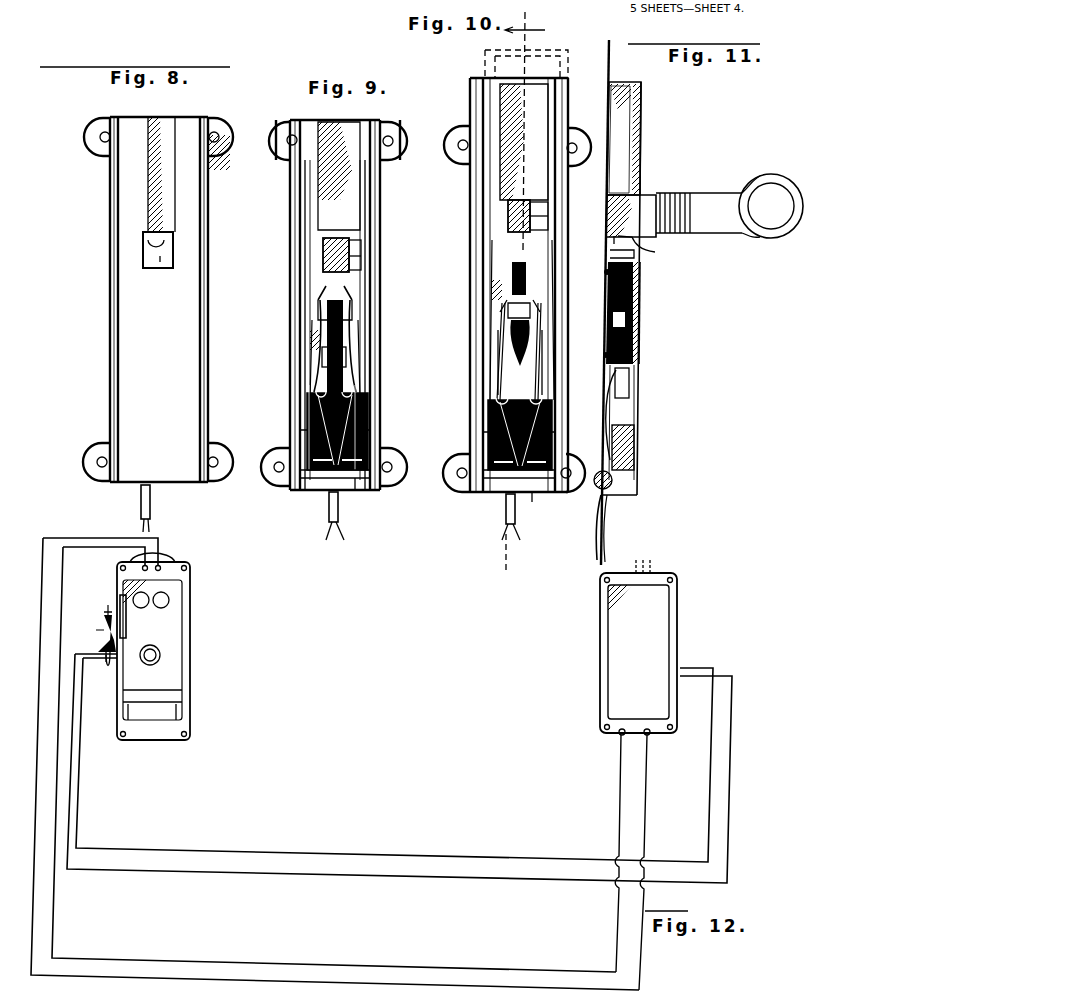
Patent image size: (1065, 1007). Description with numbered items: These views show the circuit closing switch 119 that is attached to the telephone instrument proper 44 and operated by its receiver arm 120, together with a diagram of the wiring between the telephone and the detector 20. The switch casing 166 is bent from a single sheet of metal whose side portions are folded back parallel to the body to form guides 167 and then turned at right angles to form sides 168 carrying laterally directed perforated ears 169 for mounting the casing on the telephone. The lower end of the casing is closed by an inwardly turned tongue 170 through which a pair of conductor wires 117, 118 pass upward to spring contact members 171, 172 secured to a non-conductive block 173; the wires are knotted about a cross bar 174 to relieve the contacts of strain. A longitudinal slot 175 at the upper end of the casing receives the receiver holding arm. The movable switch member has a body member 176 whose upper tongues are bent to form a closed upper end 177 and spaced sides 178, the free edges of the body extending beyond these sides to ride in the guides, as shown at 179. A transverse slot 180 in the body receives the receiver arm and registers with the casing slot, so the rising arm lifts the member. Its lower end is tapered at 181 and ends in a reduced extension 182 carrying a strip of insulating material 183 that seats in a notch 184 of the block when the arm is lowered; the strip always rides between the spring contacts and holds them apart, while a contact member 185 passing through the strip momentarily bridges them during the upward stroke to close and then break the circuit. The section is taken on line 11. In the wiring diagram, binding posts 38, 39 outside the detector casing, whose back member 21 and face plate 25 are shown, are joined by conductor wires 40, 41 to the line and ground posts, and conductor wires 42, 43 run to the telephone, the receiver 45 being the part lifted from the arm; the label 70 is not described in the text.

In FIG. 10, the section line 11 is at (525, 301).
In FIG. 12, the detector 20 is at (688, 633).
In FIG. 12, the back member 21 is at (656, 574).
In FIG. 12, the cover or face plate 25 is at (633, 646).
In FIG. 12, the binding post 38 is at (650, 738).
In FIG. 12, the binding post 39 is at (618, 738).
In FIG. 12, the conductor wire 40 is at (648, 728).
In FIG. 12, the conductor wire 41 is at (622, 728).
In FIG. 12, the conductor wire 42 is at (352, 980).
In FIG. 12, the conductor wire 43 is at (382, 932).
In FIG. 12, the telephone instrument proper 44 is at (188, 614).
In FIG. 12, the receiver 45 is at (102, 654).
In FIG. 10, the cord 70 is at (530, 500).
In FIG. 8, the conductor wire 117 is at (141, 516).
In FIG. 9, the conductor wire 117 is at (330, 532).
In FIG. 10, the conductor wire 117 is at (504, 538).
In FIG. 11, the conductor wire 117 is at (604, 560).
In FIG. 12, the conductor wire 117 is at (378, 814).
In FIG. 8, the conductor wire 118 is at (151, 516).
In FIG. 9, the conductor wire 118 is at (336, 538).
In FIG. 10, the conductor wire 118 is at (514, 538).
In FIG. 11, the conductor wire 118 is at (608, 564).
In FIG. 12, the conductor wire 118 is at (446, 887).
In FIG. 8, the switch 119 is at (104, 321).
In FIG. 9, the switch 119 is at (281, 329).
In FIG. 10, the switch 119 is at (479, 326).
In FIG. 11, the switch 119 is at (650, 385).
In FIG. 12, the switch 119 is at (118, 598).
In FIG. 9, the receiver arm 120 is at (362, 248).
In FIG. 10, the receiver arm 120 is at (548, 214).
In FIG. 11, the receiver arm 120 is at (670, 193).
In FIG. 12, the receiver arm 120 is at (104, 628).
In FIG. 8, the casing 166 is at (190, 350).
In FIG. 9, the casing 166 is at (362, 390).
In FIG. 10, the casing 166 is at (492, 372).
In FIG. 11, the casing 166 is at (642, 418).
In FIG. 12, the casing 166 is at (128, 630).
In FIG. 9, the guides 167 is at (300, 215).
In FIG. 10, the guides 167 is at (490, 106).
In FIG. 11, the guides 167 is at (646, 110).
In FIG. 9, the sides 168 is at (300, 282).
In FIG. 10, the sides 168 is at (556, 256).
In FIG. 8, the perforated ears 169 is at (216, 152).
In FIG. 9, the perforated ears 169 is at (394, 160).
In FIG. 10, the perforated ears 169 is at (578, 128).
In FIG. 9, the tongue 170 is at (346, 494).
In FIG. 11, the tongue 170 is at (616, 490).
In FIG. 9, the spring contact member 171 is at (312, 378).
In FIG. 10, the spring contact member 171 is at (496, 384).
In FIG. 11, the spring contact member 171 is at (640, 395).
In FIG. 9, the spring contact member 172 is at (350, 358).
In FIG. 10, the spring contact member 172 is at (545, 368).
In FIG. 9, the block 173 is at (362, 432).
In FIG. 10, the block 173 is at (544, 436).
In FIG. 11, the block 173 is at (640, 448).
In FIG. 9, the cross bar 174 is at (312, 490).
In FIG. 10, the cross bar 174 is at (488, 494).
In FIG. 8, the slot 175 is at (165, 255).
In FIG. 9, the slot 175 is at (362, 262).
In FIG. 10, the slot 175 is at (550, 222).
In FIG. 11, the slot 175 is at (656, 252).
In FIG. 8, the body member 176 is at (150, 182).
In FIG. 9, the closed upper end 177 is at (330, 122).
In FIG. 10, the closed upper end 177 is at (540, 84).
In FIG. 11, the closed upper end 177 is at (640, 88).
In FIG. 9, the spaced sides 178 is at (300, 182).
In FIG. 10, the spaced sides 178 is at (552, 88).
In FIG. 11, the spaced sides 178 is at (630, 142).
In FIG. 10, the engagement of body edges in guides 179 is at (486, 66).
In FIG. 8, the transverse slot 180 is at (162, 236).
In FIG. 9, the transverse slot 180 is at (350, 238).
In FIG. 10, the transverse slot 180 is at (536, 200).
In FIG. 11, the transverse slot 180 is at (640, 192).
In FIG. 9, the tapered lower end 181 is at (318, 312).
In FIG. 10, the tapered lower end 181 is at (508, 280).
In FIG. 9, the reduced extension 182 is at (305, 392).
In FIG. 10, the reduced extension 182 is at (520, 441).
In FIG. 11, the reduced extension 182 is at (640, 302).
In FIG. 9, the strip of insulating material 183 is at (352, 300).
In FIG. 10, the strip of insulating material 183 is at (540, 302).
In FIG. 11, the strip of insulating material 183 is at (640, 272).
In FIG. 9, the notch 184 is at (356, 400).
In FIG. 10, the notch 184 is at (538, 400).
In FIG. 11, the notch 184 is at (640, 404).
In FIG. 9, the contact member 185 is at (320, 345).
In FIG. 10, the contact member 185 is at (536, 326).
In FIG. 11, the contact member 185 is at (628, 320).